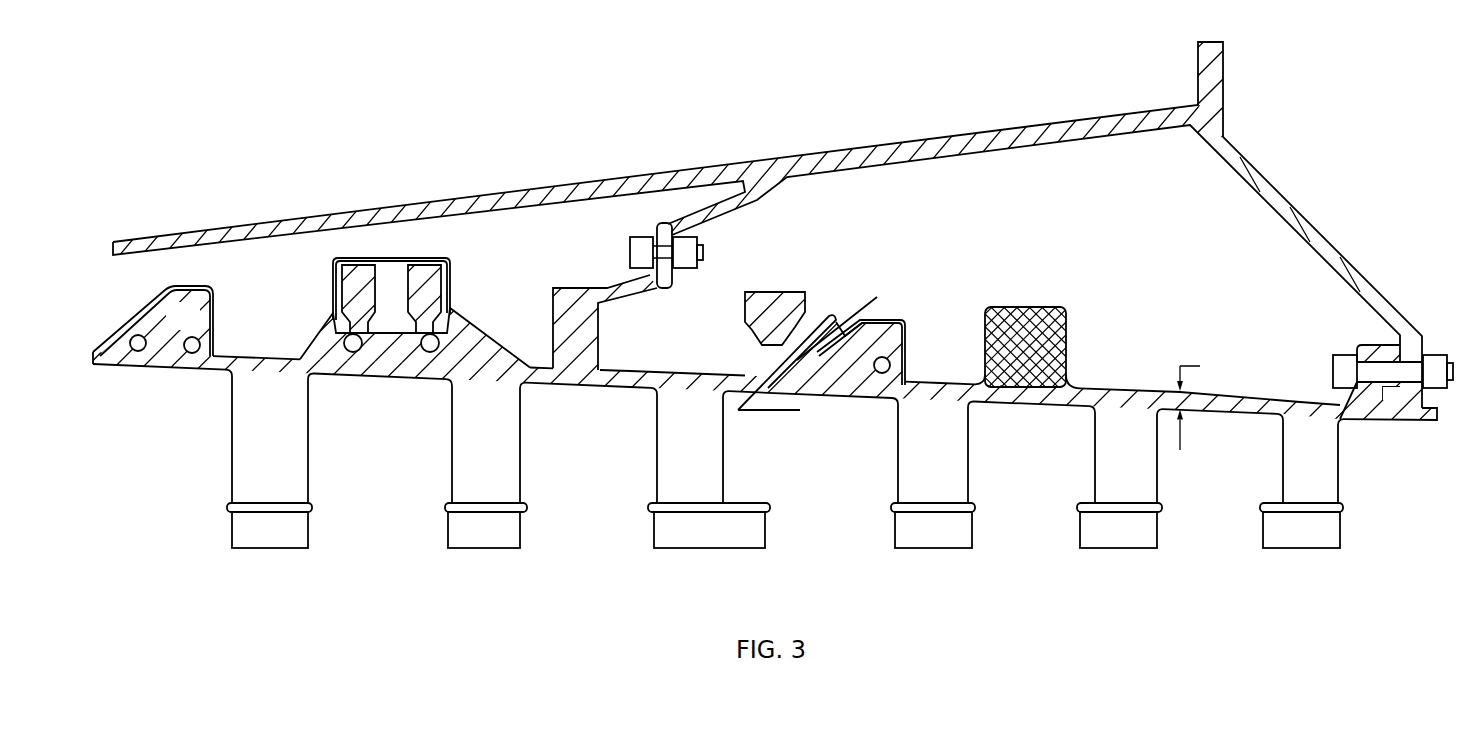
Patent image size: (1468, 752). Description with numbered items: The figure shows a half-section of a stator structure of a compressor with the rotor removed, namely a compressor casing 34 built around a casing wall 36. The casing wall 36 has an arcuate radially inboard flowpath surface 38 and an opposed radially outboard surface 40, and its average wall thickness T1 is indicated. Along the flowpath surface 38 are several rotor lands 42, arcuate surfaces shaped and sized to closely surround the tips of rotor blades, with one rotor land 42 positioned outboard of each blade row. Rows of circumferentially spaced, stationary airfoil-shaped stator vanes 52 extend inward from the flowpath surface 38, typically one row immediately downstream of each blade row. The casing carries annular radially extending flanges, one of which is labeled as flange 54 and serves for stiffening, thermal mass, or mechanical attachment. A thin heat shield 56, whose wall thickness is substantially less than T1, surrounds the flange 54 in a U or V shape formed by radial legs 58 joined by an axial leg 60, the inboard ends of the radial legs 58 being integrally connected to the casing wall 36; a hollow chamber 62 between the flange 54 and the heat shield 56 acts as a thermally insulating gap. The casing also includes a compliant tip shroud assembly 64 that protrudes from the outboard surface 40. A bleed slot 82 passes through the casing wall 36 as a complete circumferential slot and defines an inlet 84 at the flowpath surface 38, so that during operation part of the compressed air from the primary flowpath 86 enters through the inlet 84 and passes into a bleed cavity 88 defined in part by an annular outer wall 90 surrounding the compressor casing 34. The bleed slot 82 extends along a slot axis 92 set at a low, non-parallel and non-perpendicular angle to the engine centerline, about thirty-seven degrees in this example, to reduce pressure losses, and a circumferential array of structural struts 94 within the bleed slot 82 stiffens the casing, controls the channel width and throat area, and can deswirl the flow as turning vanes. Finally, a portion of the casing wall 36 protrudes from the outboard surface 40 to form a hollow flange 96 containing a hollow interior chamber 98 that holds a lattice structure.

The compressor casing 34 is at (1146, 349).
The casing wall 36 is at (652, 373).
The flowpath surface 38 is at (633, 389).
The outboard surface 40 is at (539, 356).
The rotor land 42 is at (178, 362).
The stator vane 52 is at (257, 484).
The flange 54 is at (168, 327).
The heat shield 56 is at (154, 290).
The radial leg 58 is at (141, 317).
The axial leg 60 is at (197, 289).
The hollow chamber 62 is at (142, 352).
The compliant tip shroud assembly 64 is at (464, 260).
The bleed slot 82 is at (845, 303).
The inlet 84 is at (760, 372).
The primary flowpath 86 is at (763, 471).
The bleed cavity 88 is at (974, 198).
The annular outer wall 90 is at (1063, 142).
The slot axis 92 is at (877, 297).
The structural strut 94 is at (817, 369).
The hollow flange 96 is at (1024, 290).
The hollow interior chamber 98 is at (1050, 317).
The average wall thickness T1 is at (1204, 402).